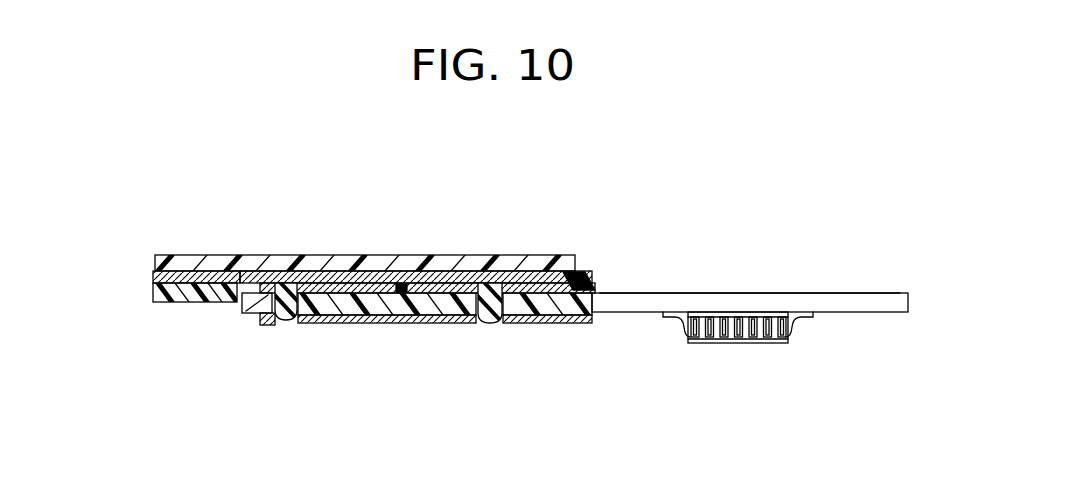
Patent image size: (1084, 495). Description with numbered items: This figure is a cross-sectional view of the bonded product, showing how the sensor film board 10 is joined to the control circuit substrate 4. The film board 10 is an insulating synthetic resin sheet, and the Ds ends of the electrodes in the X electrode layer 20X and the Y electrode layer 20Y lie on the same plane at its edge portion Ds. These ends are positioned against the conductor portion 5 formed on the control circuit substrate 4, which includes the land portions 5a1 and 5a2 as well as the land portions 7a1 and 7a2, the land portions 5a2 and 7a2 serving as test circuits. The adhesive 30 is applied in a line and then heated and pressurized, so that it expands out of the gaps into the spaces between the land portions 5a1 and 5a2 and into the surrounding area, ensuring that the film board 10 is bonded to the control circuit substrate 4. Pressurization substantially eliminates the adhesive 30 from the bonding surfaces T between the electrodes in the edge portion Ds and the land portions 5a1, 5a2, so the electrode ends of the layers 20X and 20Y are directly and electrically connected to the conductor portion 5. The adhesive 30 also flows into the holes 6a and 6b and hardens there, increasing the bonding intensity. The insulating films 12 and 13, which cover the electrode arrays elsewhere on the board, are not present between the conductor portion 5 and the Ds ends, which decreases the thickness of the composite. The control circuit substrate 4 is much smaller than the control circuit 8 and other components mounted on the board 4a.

The X electrode layer 20X is at (365, 228).
The Y electrode layer 20Y is at (183, 262).
The adhesive 30 is at (303, 262).
The land portion 5a2 is at (372, 276).
The edge portion Ds is at (432, 280).
The land portion 5a1 is at (450, 288).
The film board 10 is at (536, 263).
The bonding surfaces T is at (587, 280).
The control circuit substrate 4 is at (761, 283).
The board 4a is at (853, 299).
The insulating film 12 is at (153, 282).
The insulating film 13 is at (153, 297).
The conductor portion 5 is at (265, 337).
The hole 6b is at (293, 327).
The land portion 7a2 is at (345, 323).
The land portion 7a1 is at (442, 323).
The hole 6a is at (495, 323).
The control circuit 8 is at (737, 343).